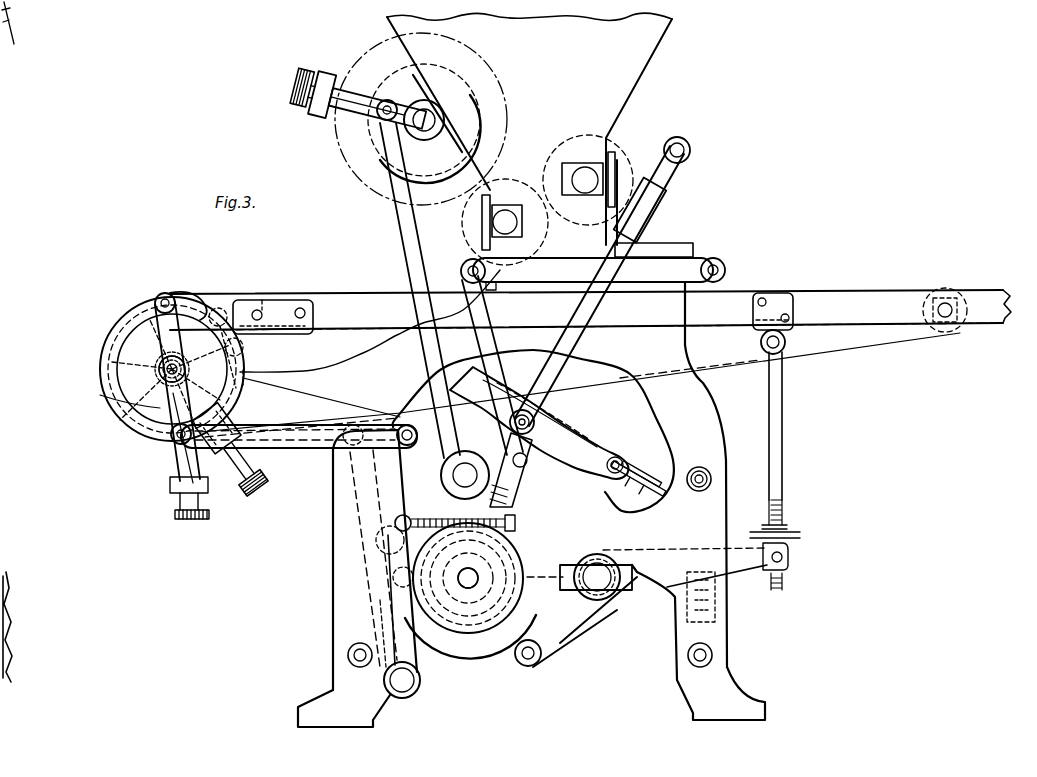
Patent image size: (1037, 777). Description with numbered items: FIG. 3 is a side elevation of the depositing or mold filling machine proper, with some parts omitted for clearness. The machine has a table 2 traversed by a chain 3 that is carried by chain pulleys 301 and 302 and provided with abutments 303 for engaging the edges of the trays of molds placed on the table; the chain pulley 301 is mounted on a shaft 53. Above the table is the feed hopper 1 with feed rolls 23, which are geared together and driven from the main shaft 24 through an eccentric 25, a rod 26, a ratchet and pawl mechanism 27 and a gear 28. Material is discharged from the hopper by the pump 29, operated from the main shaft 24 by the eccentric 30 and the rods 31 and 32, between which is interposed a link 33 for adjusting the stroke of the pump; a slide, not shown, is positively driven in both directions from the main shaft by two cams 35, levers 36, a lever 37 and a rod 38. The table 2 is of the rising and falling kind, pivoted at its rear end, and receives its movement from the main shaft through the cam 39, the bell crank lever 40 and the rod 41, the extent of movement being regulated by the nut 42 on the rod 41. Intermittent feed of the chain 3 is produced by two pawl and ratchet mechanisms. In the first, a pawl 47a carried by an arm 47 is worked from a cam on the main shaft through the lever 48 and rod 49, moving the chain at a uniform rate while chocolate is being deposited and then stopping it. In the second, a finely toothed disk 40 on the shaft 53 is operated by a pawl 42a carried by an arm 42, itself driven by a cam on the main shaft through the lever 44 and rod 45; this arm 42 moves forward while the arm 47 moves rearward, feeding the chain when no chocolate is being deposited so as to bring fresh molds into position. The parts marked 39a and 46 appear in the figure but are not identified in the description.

The feed hopper 1 is at (529, 129).
The table 2 is at (362, 304).
The chain 3 is at (735, 364).
The feed rolls 23 is at (556, 160).
The main shaft 24 is at (462, 590).
The eccentric 25 is at (538, 552).
The rod 26 is at (416, 338).
The ratchet and pawl mechanism 27 is at (372, 126).
The gear 28 is at (444, 203).
The pump 29 is at (652, 228).
The eccentric 30 is at (488, 640).
The rod 31 is at (520, 484).
The rod 32 is at (570, 344).
The link 33 is at (559, 436).
The cams 35 is at (386, 610).
The levers 36 is at (398, 512).
The lever 37 is at (480, 342).
The rod 38 is at (638, 280).
The cam 39 is at (171, 372).
The link bar 39a is at (562, 628).
The bell crank lever 40 is at (197, 304).
The rod 41 is at (155, 303).
The nut 42 is at (805, 548).
The pawl 42a is at (176, 292).
The lever 44 is at (440, 475).
The rod 45 is at (275, 448).
The cord line 46 is at (108, 404).
The arm 47 is at (216, 308).
The pawl 47a is at (246, 347).
The lever 48 is at (362, 531).
The rod 49 is at (242, 448).
The shaft 53 is at (158, 366).
The chain pulley 301 is at (243, 360).
The chain pulley 302 is at (960, 322).
The abutments 303 is at (240, 306).